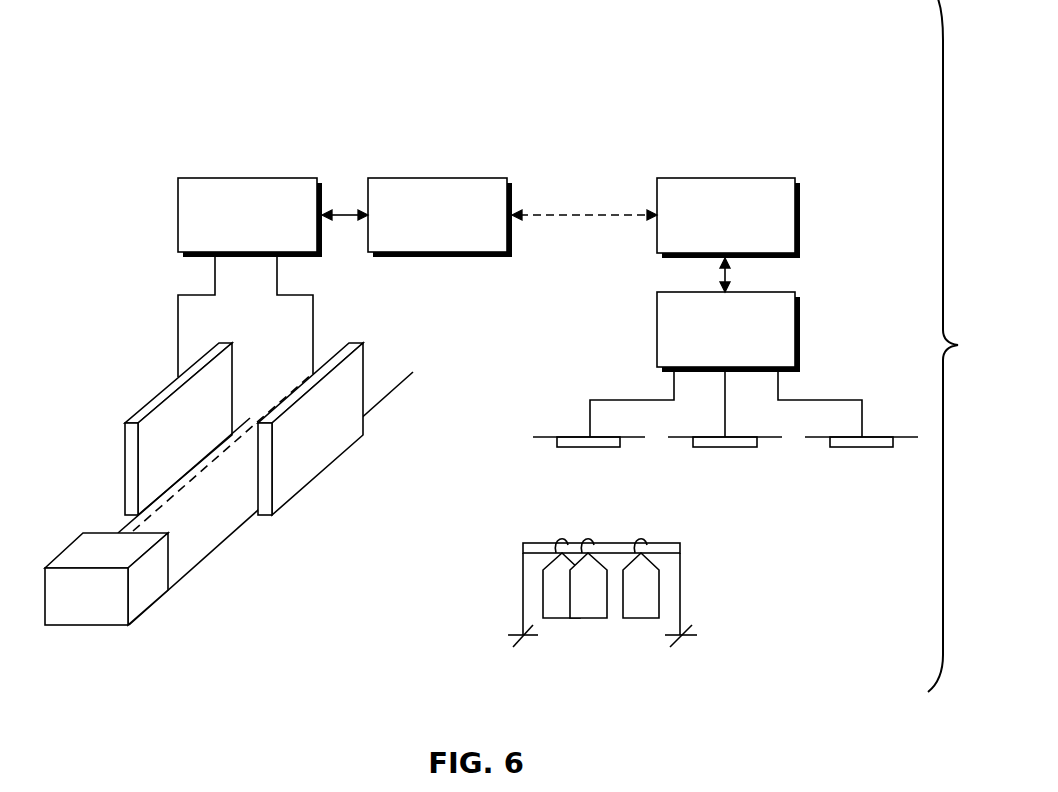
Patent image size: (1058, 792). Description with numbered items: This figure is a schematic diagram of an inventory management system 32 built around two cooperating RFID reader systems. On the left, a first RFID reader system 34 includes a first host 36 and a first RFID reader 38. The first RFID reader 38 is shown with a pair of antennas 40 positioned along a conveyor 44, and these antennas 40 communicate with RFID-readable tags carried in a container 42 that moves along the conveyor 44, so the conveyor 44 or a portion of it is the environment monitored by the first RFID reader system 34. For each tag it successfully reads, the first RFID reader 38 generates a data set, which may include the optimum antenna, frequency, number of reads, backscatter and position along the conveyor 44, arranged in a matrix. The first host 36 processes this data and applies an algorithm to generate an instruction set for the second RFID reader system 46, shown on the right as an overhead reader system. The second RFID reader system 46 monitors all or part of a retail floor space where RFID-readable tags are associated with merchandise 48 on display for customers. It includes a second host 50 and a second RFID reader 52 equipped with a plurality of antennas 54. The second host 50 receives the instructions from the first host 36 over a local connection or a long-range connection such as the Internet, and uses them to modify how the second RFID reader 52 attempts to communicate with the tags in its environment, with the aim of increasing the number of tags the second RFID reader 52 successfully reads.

The inventory management system 32 is at (615, 68).
The first RFID reader system 34 is at (358, 138).
The first host 36 is at (440, 178).
The first RFID reader 38 is at (248, 178).
The antennas 40 is at (140, 412).
The container 42 is at (87, 617).
The conveyor 44 is at (205, 537).
The second RFID reader system 46 is at (752, 156).
The merchandise 48 is at (590, 618).
The second host 50 is at (800, 215).
The second RFID reader 52 is at (800, 328).
The antennas 54 is at (590, 447).